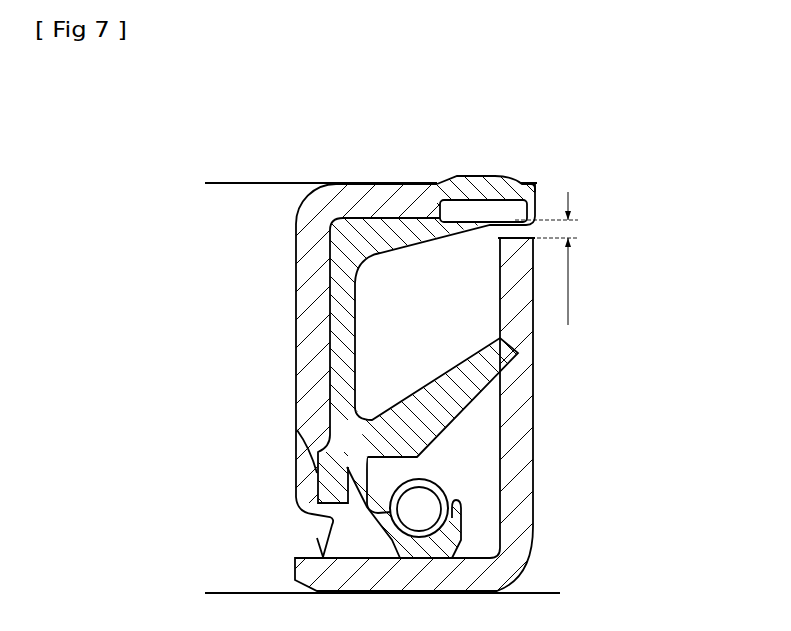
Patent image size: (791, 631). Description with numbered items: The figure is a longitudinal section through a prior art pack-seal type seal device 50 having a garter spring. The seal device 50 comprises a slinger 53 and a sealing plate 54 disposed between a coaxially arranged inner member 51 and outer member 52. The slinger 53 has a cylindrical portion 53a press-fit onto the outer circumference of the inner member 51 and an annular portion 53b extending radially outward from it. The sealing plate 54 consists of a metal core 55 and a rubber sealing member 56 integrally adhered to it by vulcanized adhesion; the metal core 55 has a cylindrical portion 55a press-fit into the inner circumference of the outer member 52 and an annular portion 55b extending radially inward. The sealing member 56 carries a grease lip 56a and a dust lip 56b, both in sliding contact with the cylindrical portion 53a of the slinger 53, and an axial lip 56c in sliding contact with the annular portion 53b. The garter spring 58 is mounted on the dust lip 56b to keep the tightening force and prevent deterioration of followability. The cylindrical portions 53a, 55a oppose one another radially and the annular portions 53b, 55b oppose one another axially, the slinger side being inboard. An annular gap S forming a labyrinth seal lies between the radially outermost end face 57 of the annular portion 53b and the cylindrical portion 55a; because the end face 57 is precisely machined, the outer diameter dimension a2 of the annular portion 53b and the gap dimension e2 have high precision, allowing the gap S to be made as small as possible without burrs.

The seal device 50 is at (237, 229).
The inner member 51 is at (223, 605).
The outer member 52 is at (265, 178).
The slinger 53 is at (517, 414).
The cylindrical portion 53a is at (503, 496).
The annular portion 53b is at (520, 402).
The sealing plate 54 is at (325, 367).
The metal core 55 is at (306, 370).
The cylindrical portion 55a is at (380, 200).
The annular portion 55b is at (313, 328).
The sealing member 56 is at (353, 367).
The grease lip 56a is at (330, 450).
The dust lip 56b is at (345, 418).
The axial lip 56c is at (490, 352).
The radially outermost end face 57 is at (498, 234).
The garter spring 58 is at (435, 481).
The annular gap S is at (530, 183).
The dimension of the gap e2 is at (562, 258).
The outer diameter dimension a2 is at (600, 301).